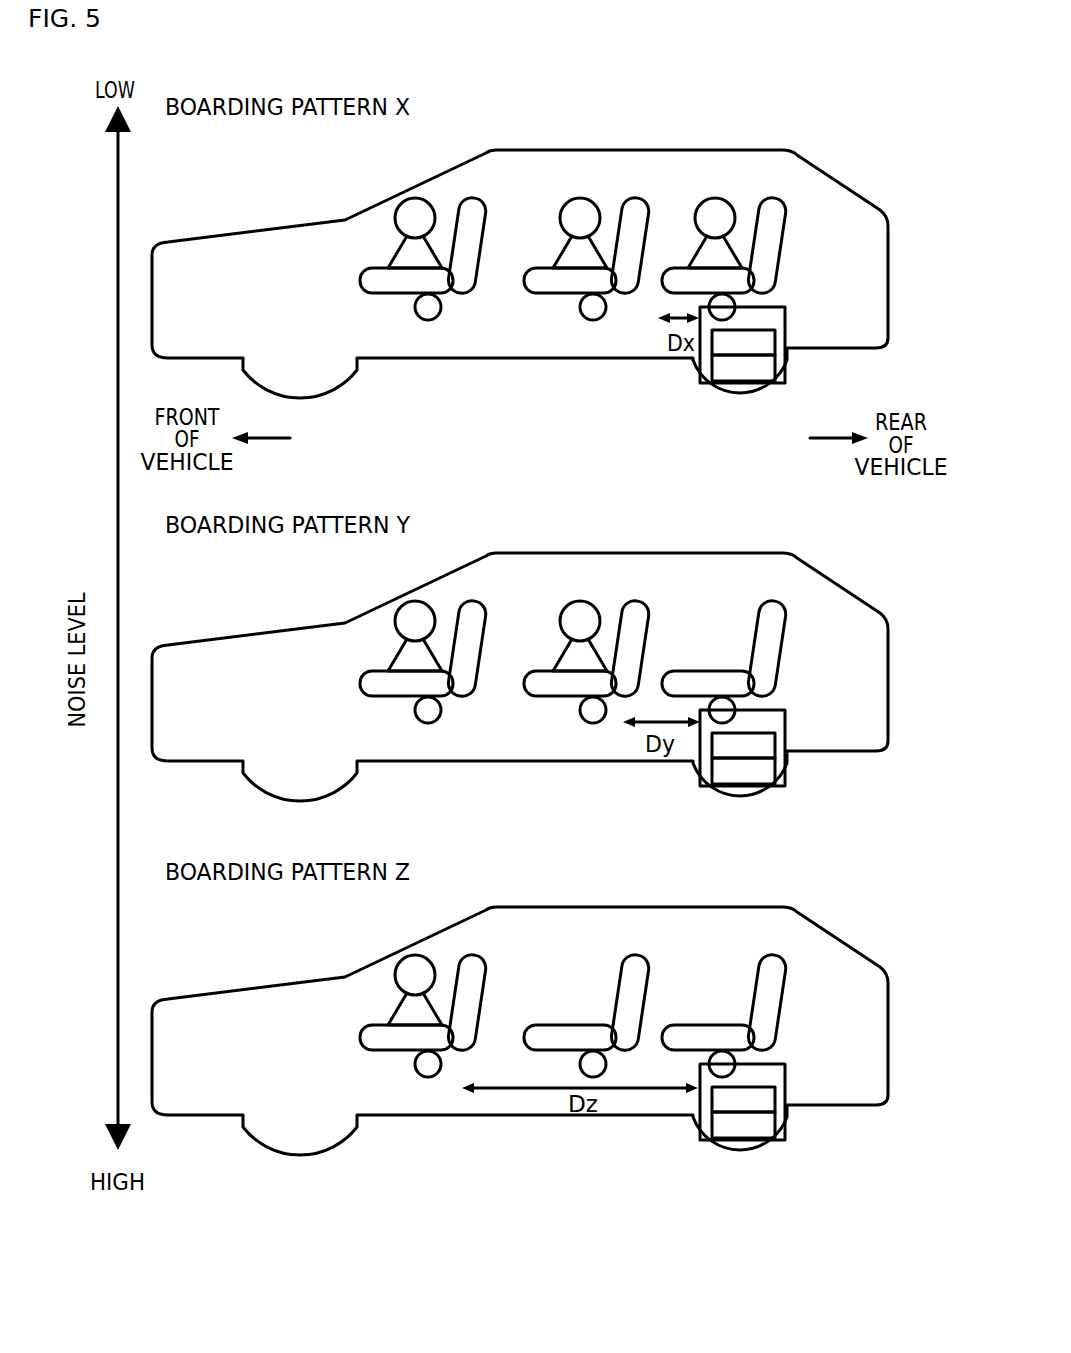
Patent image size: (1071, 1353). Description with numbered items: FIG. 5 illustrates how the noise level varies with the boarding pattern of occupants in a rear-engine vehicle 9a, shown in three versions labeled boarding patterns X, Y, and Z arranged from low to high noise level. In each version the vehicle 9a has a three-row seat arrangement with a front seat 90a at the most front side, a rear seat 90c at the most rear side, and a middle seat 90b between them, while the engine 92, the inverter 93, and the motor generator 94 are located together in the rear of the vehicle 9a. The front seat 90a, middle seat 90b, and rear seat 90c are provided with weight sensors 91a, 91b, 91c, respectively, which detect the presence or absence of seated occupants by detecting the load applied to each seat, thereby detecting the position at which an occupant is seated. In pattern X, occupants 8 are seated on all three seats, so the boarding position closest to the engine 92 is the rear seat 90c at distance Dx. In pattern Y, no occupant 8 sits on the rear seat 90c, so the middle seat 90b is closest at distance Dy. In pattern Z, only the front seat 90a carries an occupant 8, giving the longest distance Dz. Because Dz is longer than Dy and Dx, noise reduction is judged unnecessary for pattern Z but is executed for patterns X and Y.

The occupant 8 is at (426, 198).
The vehicle 9a is at (868, 162).
The front seat 90a is at (478, 197).
The middle seat 90b is at (637, 197).
The rear seat 90c is at (773, 197).
The weight sensor 91a is at (440, 317).
The weight sensor 91b is at (605, 315).
The weight sensor 91c is at (737, 305).
The engine 92 is at (785, 318).
The inverter 93 is at (776, 338).
The motor generator 94 is at (776, 367).